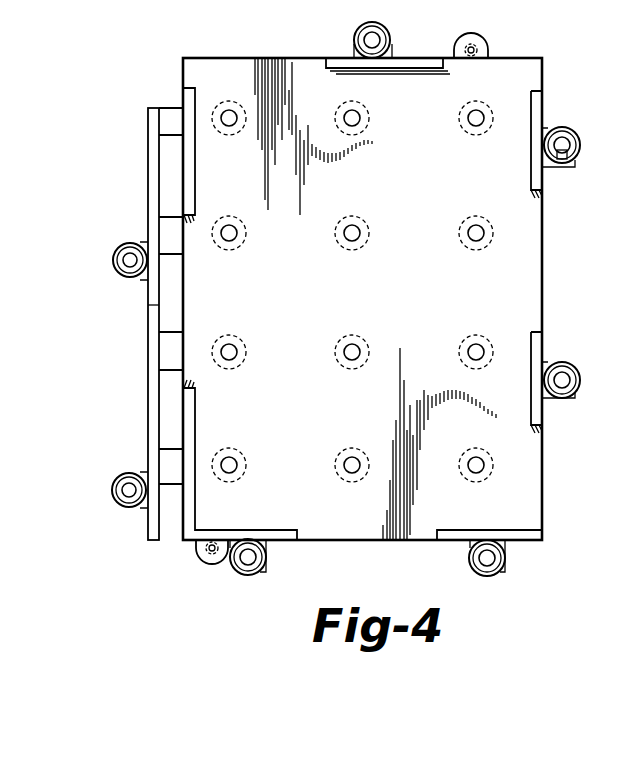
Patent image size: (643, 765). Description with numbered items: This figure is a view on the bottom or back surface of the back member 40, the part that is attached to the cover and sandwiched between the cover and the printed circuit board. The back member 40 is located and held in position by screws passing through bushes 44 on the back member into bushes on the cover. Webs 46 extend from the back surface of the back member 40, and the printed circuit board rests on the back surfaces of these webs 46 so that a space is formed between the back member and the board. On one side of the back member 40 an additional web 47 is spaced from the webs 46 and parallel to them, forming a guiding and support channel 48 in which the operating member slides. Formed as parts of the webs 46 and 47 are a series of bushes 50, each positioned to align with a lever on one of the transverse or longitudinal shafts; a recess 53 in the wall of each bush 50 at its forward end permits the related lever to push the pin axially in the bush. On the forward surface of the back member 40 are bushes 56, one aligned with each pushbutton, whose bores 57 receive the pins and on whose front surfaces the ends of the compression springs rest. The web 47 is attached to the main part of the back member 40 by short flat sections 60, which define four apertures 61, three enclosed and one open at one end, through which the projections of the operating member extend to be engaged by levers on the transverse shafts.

The back member 40 is at (418, 298).
The bushes on the back member 44 is at (482, 38).
The webs 46 is at (336, 62).
The additional web 47 is at (160, 198).
The guiding and support channel 48 is at (164, 96).
The bushes 50 is at (386, 36).
The recess 53 is at (568, 162).
The bushes 56 is at (112, 260).
The bores 57 is at (352, 358).
The short flat sections 60 is at (168, 121).
The apertures 61 is at (168, 160).